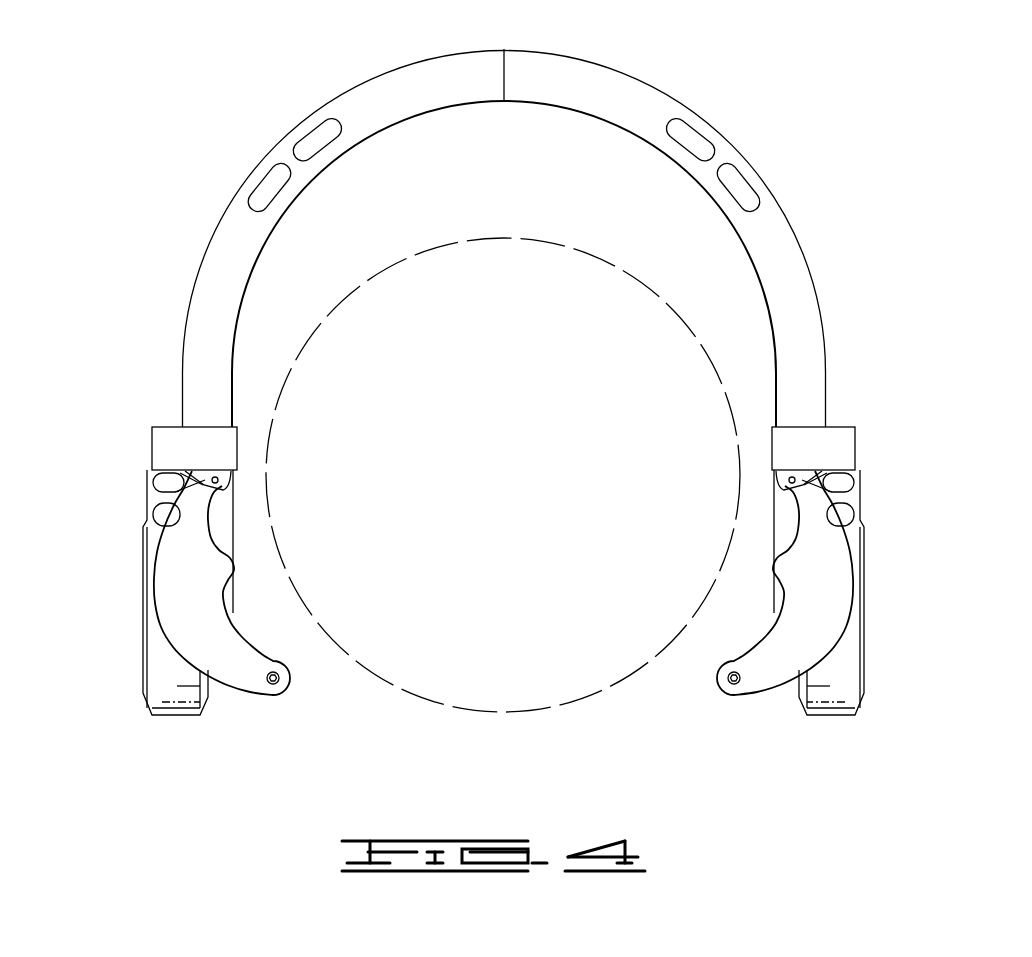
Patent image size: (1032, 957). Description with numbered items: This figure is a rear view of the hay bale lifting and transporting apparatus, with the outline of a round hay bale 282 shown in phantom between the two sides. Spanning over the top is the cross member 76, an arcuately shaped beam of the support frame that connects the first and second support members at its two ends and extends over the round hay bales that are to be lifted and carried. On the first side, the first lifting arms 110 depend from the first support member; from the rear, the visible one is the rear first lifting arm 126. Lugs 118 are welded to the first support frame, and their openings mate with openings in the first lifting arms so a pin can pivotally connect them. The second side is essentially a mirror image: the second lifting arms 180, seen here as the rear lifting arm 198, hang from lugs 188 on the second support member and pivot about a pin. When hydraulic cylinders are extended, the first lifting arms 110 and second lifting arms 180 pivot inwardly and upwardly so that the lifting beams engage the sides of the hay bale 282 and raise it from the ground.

The cross member 76 is at (558, 72).
The round hay bale 282 is at (317, 333).
The lugs 188 is at (152, 493).
The second lifting arms 180 is at (169, 592).
The rear lifting arm 198 is at (177, 598).
The lugs 118 is at (857, 495).
The first lifting arms 110 is at (832, 592).
The rear first lifting arm 126 is at (825, 603).